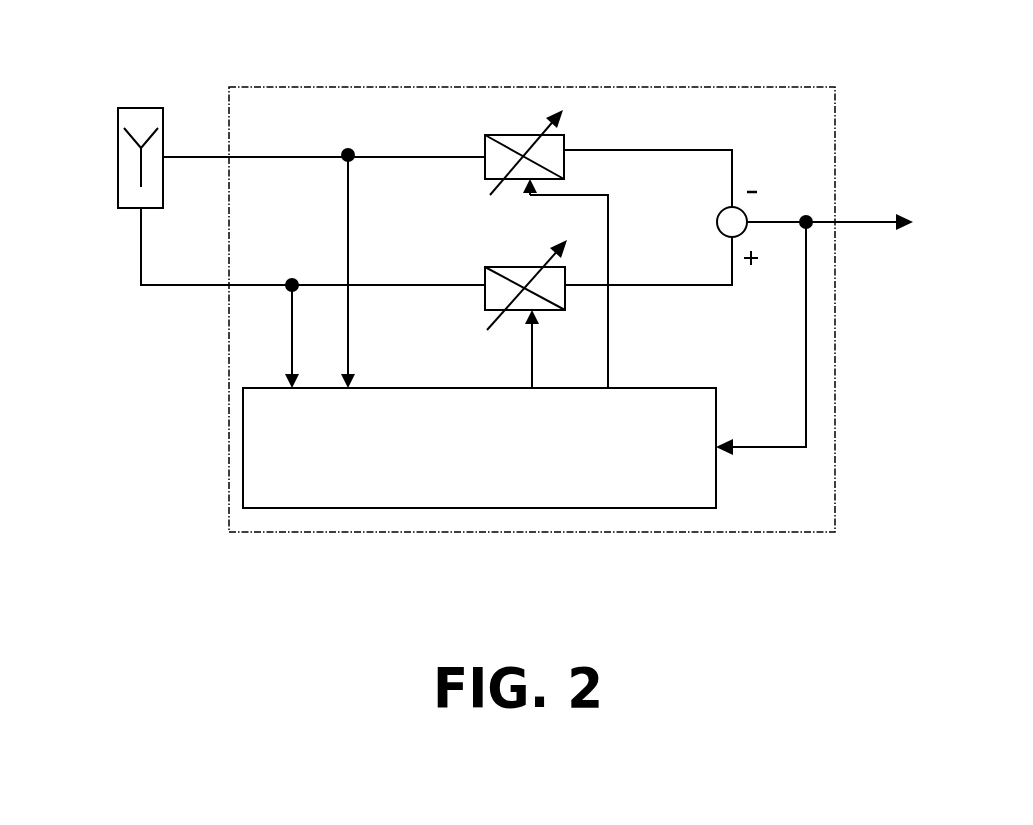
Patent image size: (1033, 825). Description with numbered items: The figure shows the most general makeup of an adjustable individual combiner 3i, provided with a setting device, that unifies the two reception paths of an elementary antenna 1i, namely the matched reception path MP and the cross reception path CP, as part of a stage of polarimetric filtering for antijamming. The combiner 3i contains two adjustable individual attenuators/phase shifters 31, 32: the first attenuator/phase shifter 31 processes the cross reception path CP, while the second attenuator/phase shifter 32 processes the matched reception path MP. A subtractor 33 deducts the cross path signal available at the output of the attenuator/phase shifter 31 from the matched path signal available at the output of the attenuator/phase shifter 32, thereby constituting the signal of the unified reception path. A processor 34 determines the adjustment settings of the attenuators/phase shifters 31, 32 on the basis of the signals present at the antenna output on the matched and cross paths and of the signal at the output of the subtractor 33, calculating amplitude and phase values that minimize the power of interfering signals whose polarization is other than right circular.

The elementary antenna 1i is at (118, 152).
The adjustable individual combiner 3i is at (660, 87).
The adjustable individual attenuator/phase shifter 31 is at (510, 135).
The adjustable individual attenuator/phase shifter 32 is at (485, 268).
The subtractor 33 is at (750, 207).
The processor 34 is at (700, 387).